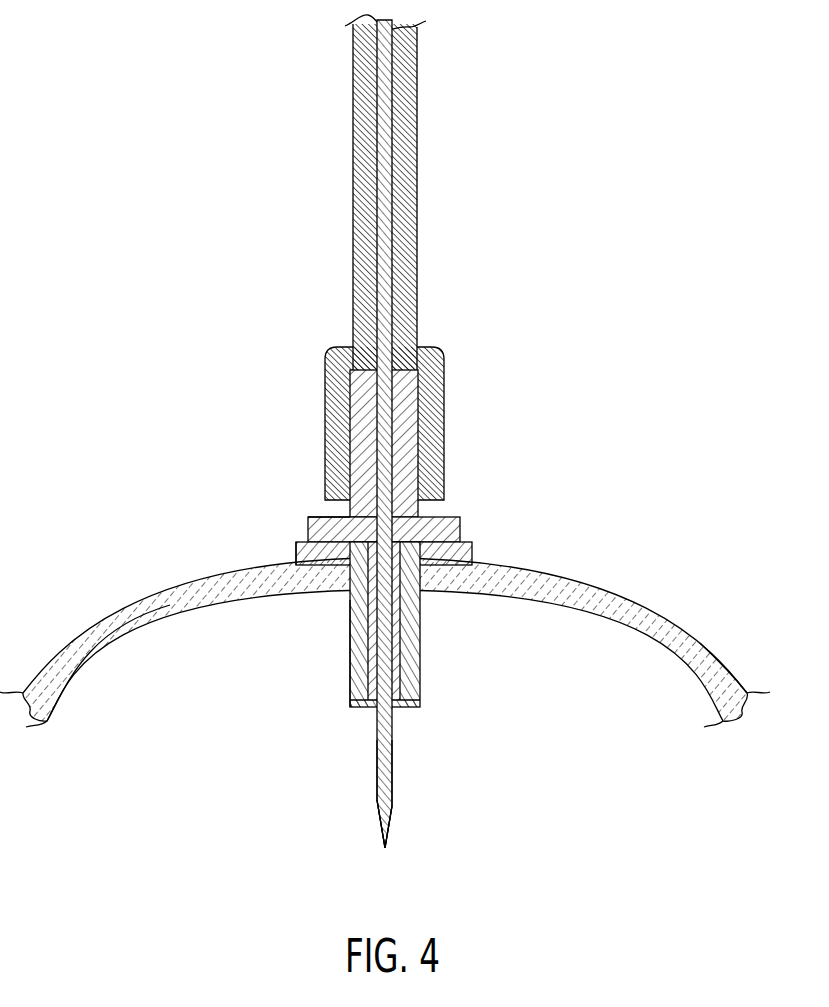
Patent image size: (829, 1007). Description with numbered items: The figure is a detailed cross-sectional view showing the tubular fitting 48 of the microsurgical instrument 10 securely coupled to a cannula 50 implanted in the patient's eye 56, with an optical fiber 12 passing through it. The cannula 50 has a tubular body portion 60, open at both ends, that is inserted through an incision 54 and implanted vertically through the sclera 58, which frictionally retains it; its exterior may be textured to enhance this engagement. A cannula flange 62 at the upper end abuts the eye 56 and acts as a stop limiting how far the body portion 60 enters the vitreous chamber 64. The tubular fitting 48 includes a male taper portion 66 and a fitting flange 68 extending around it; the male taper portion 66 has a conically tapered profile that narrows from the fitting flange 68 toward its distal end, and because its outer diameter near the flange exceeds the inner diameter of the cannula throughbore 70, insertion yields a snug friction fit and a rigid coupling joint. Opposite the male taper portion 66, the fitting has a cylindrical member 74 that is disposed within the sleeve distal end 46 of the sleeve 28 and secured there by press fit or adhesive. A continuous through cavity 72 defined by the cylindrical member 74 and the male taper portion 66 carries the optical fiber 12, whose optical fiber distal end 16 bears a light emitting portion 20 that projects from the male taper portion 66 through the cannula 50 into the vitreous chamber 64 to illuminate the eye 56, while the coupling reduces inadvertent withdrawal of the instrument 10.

The instrument 10 is at (480, 203).
The optical fiber 12 is at (353, 43).
The optical fiber distal end 16 is at (359, 772).
The light emitting portion 20 is at (395, 817).
The sleeve 28 is at (350, 120).
The sleeve distal end 46 is at (445, 412).
The tubular fitting 48 is at (444, 517).
The cannula 50 is at (472, 545).
The incision 54 is at (379, 654).
The eye 56 is at (715, 655).
The sclera 58 is at (580, 588).
The tubular body portion 60 is at (420, 668).
The cannula flange 62 is at (296, 545).
The vitreous chamber 64 is at (152, 665).
The male taper portion 66 is at (405, 628).
The fitting flange 68 is at (323, 517).
The throughbore 70 is at (373, 702).
The through cavity 72 is at (355, 656).
The cylindrical member 74 is at (326, 390).